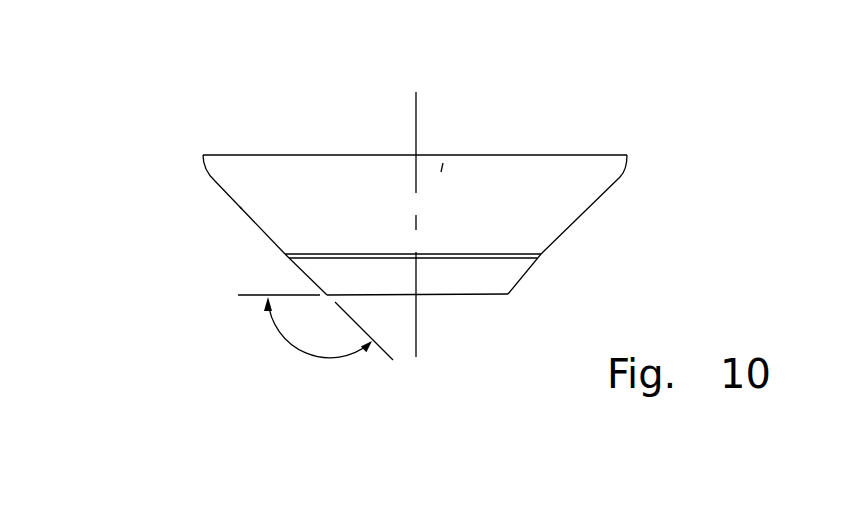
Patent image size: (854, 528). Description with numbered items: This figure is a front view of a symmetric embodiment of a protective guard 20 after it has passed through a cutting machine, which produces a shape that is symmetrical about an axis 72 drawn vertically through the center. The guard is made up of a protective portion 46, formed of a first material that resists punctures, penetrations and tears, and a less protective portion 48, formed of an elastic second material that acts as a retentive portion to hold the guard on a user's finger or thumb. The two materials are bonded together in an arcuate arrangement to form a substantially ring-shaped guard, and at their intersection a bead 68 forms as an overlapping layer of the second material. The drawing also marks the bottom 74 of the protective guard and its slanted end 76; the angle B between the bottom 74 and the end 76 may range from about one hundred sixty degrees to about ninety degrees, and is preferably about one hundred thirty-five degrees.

The protective guard 20 is at (195, 120).
The protective portion 46 is at (493, 210).
The less protective portion 48 is at (465, 283).
The bead 68 is at (507, 257).
The axis 72 is at (415, 120).
The bottom 74 is at (377, 293).
The end 76 is at (240, 207).
The angle B is at (315, 344).